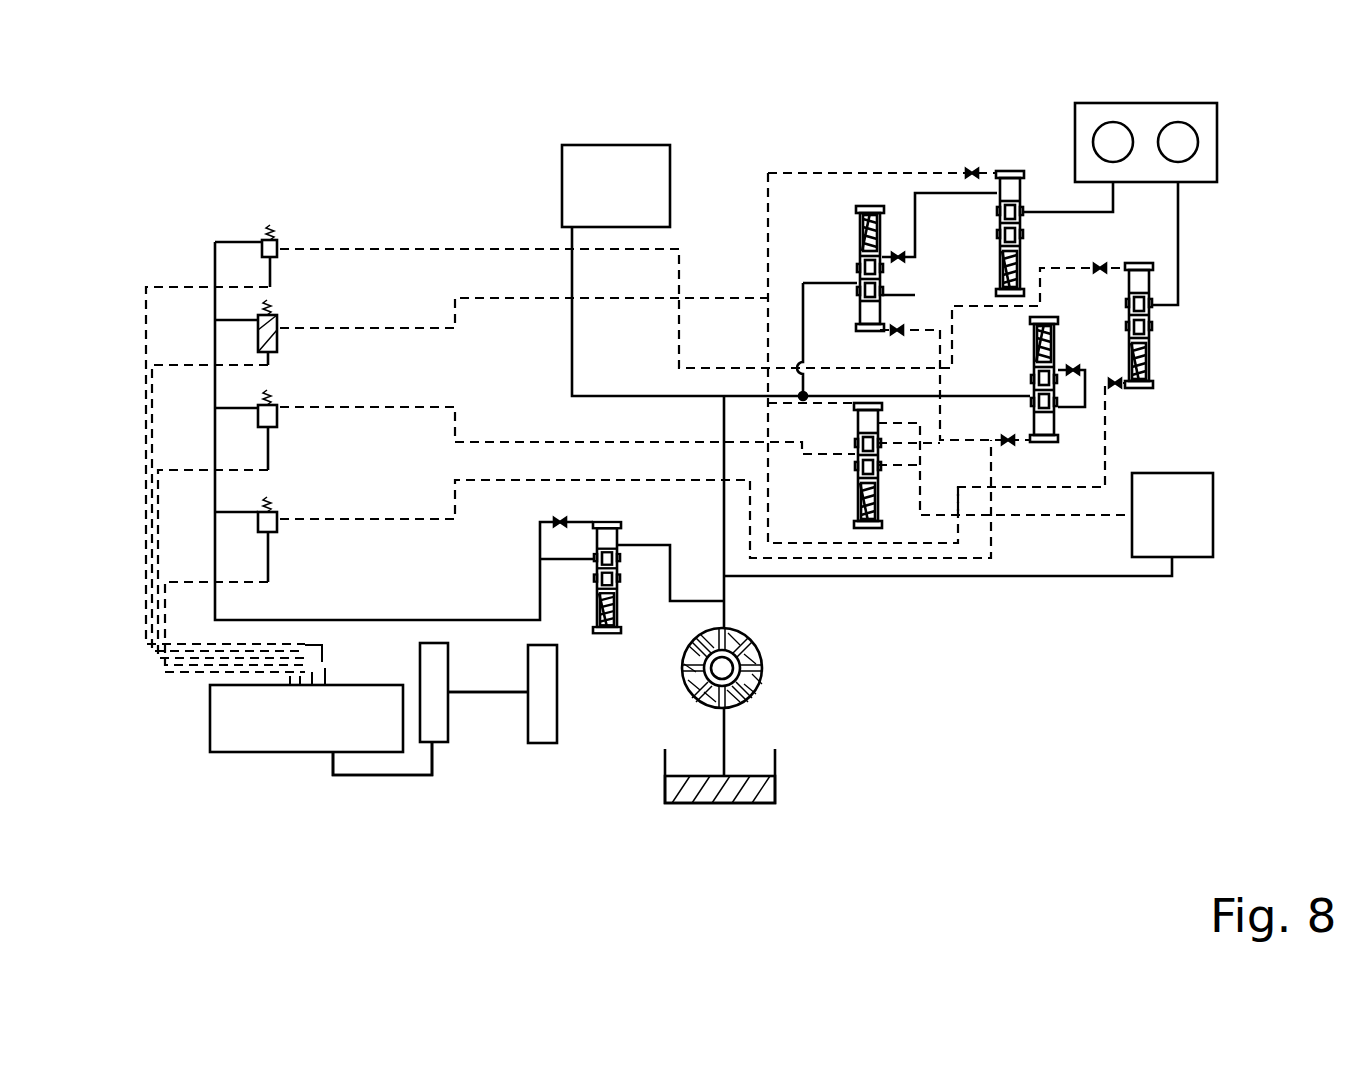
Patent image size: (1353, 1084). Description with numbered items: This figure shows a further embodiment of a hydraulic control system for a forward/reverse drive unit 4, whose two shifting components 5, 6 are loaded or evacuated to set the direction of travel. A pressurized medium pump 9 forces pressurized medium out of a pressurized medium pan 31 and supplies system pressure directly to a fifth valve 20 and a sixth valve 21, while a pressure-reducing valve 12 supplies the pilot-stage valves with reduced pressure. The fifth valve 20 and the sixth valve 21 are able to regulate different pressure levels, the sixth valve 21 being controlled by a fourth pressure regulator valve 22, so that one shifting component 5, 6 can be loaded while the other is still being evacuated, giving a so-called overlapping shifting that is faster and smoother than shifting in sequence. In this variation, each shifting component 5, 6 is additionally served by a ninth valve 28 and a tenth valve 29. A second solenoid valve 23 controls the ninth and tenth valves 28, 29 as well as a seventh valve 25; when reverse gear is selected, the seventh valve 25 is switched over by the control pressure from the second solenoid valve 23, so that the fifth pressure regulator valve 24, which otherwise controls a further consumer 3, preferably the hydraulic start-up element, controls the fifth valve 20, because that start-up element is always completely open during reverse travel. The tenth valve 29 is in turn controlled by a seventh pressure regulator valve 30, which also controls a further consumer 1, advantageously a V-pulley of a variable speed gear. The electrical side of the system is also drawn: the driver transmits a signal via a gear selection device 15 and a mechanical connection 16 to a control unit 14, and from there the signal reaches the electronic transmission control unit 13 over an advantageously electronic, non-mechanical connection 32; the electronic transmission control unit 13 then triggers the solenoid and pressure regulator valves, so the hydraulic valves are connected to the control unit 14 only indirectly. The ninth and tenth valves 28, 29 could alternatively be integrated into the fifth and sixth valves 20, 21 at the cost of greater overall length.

The further consumer 1 is at (612, 172).
The further consumer 3 is at (1173, 513).
The forward/reverse drive unit 4 is at (1208, 130).
The shifting component 5 is at (1115, 148).
The shifting component 6 is at (1180, 150).
The pressurized medium pump 9 is at (755, 690).
The pressure-reducing valve 12 is at (610, 633).
The electronic transmission control unit 13 is at (245, 727).
The control unit 14 is at (438, 720).
The gear selection device 15 is at (548, 682).
The mechanical connection 16 is at (495, 692).
The fifth valve 20 is at (867, 257).
The sixth valve 21 is at (1043, 392).
The fourth pressure regulator valve 22 is at (278, 512).
The second solenoid valve 23 is at (258, 325).
The fifth pressure regulator valve 24 is at (268, 405).
The seventh valve 25 is at (868, 478).
The ninth valve 28 is at (1008, 225).
The tenth valve 29 is at (1150, 345).
The seventh pressure regulator valve 30 is at (263, 240).
The pressurized medium pan 31 is at (707, 790).
The non-mechanical connection 32 is at (362, 776).